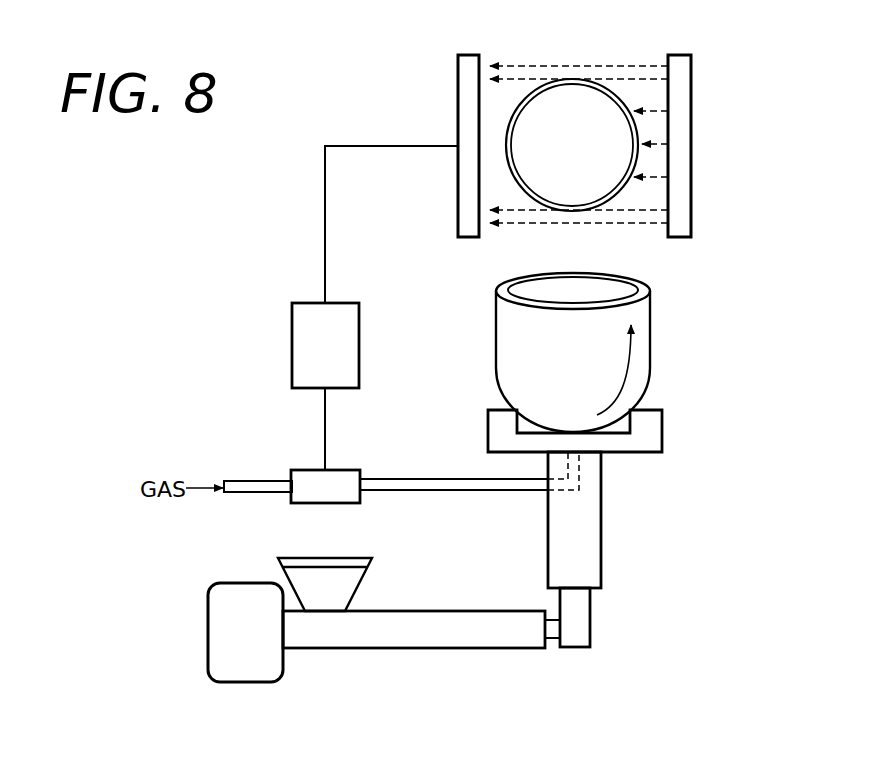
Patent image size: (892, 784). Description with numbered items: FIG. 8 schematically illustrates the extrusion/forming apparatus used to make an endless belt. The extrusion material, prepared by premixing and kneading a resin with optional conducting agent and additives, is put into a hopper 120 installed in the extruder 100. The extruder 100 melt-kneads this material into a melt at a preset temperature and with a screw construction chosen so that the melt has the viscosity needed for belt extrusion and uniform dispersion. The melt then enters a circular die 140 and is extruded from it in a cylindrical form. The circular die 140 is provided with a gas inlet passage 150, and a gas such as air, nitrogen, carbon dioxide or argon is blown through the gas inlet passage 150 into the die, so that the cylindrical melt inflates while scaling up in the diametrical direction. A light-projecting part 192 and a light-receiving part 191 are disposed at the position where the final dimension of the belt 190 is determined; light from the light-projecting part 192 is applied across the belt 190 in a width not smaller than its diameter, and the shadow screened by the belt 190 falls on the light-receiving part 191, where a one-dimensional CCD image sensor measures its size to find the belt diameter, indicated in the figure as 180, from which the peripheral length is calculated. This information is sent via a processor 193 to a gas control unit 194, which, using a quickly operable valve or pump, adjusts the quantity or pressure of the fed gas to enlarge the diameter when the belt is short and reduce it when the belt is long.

The extruder 100 is at (452, 636).
The hopper 120 is at (348, 582).
The circular die 140 is at (597, 524).
The gas inlet passage 150 is at (455, 483).
The wafer diameter 180 is at (573, 89).
The belt 190 is at (540, 211).
The light-receiving part 191 is at (467, 117).
The light-projecting part 192 is at (682, 159).
The processor 193 is at (298, 345).
The gas control unit 194 is at (310, 476).